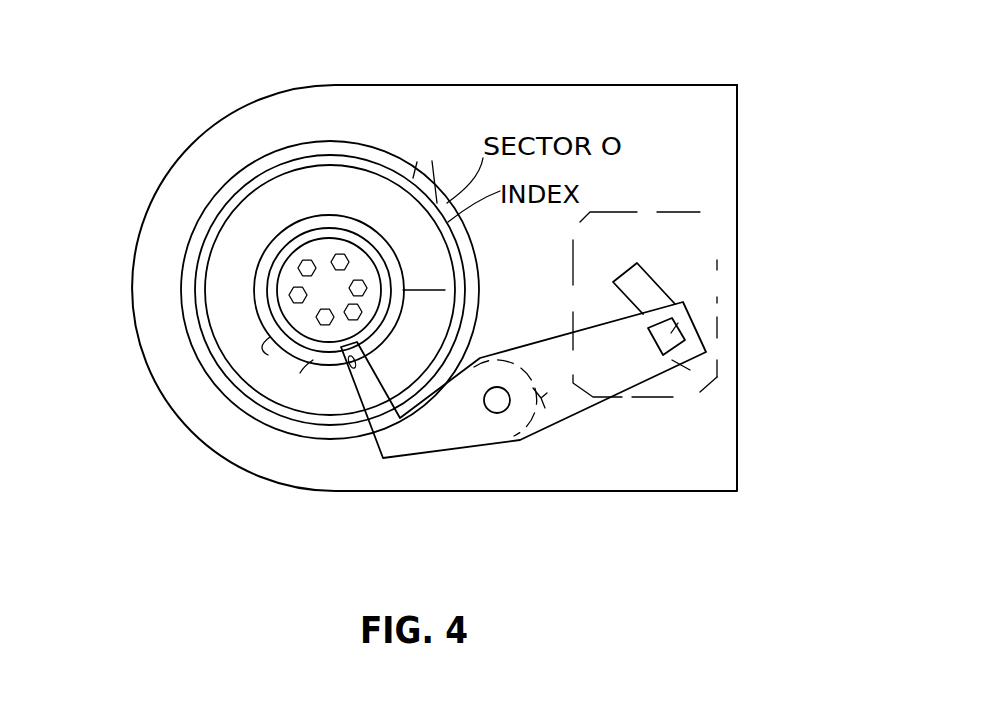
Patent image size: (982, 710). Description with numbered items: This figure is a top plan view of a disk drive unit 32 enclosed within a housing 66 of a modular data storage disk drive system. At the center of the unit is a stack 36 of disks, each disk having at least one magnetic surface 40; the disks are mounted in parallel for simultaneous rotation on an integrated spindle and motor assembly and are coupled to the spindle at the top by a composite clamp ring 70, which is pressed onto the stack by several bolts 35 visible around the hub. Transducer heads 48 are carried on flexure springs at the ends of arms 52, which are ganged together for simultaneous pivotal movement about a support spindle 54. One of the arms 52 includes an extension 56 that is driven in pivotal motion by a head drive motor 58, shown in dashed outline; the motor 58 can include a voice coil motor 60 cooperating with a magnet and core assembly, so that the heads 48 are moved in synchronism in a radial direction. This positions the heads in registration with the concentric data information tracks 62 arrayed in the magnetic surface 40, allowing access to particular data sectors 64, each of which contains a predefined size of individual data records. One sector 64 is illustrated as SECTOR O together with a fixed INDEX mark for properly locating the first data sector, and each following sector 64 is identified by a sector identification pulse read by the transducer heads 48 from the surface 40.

The disk drive unit 32 is at (745, 62).
The bolts 35 is at (300, 268).
The stack 36 is at (162, 239).
The magnetic surface 40 is at (237, 185).
The transducer heads 48 is at (347, 364).
The arms 52 is at (420, 447).
The support spindle 54 is at (500, 413).
The extension 56 is at (633, 375).
The head drive motor 58 is at (698, 243).
The voice coil motor 60 is at (672, 332).
The data information tracks 62 is at (460, 312).
The data sectors 64 is at (373, 163).
The housing 66 is at (610, 85).
The composite clamp ring 70 is at (290, 295).